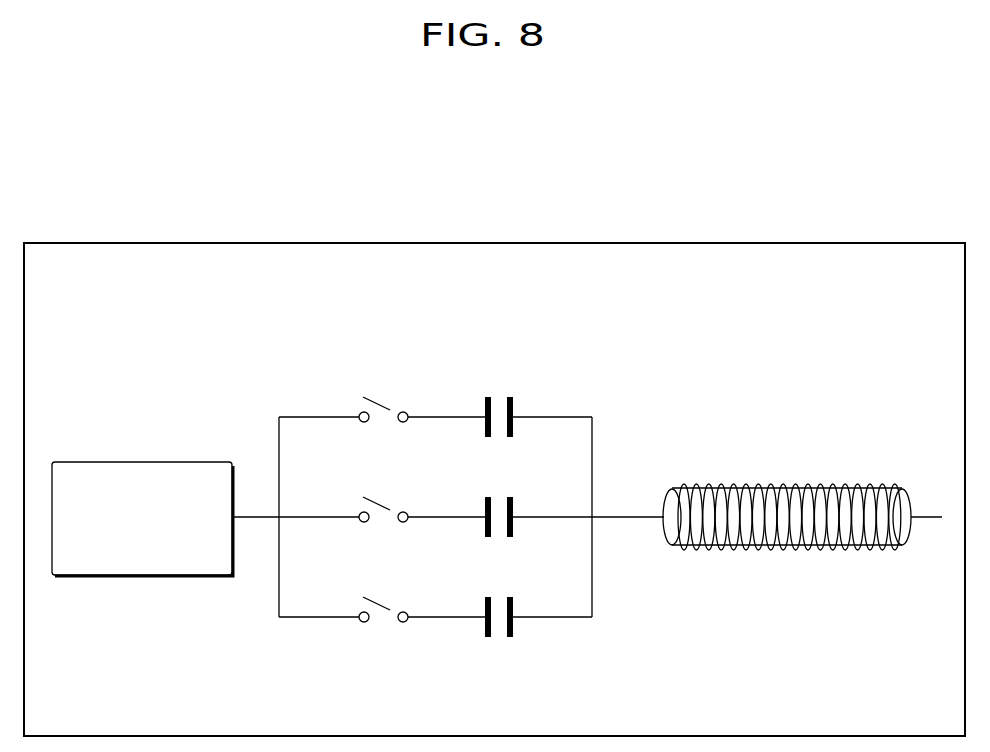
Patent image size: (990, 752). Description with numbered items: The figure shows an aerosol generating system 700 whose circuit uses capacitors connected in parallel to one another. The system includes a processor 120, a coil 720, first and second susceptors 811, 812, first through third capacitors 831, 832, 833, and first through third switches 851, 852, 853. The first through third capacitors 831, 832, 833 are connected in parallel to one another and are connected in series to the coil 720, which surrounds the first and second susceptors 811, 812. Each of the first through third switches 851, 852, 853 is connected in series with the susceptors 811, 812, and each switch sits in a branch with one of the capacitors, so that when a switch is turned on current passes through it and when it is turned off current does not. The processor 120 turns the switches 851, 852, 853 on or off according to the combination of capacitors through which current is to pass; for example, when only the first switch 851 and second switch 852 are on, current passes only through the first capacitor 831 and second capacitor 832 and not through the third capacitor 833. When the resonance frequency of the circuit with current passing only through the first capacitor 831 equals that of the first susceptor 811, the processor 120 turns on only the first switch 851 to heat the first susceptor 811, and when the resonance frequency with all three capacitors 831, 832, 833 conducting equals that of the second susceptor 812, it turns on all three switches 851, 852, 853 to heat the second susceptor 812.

The aerosol generating system 700 is at (805, 217).
The processor 120 is at (157, 462).
The first switch 851 is at (403, 401).
The second switch 852 is at (403, 501).
The third switch 853 is at (403, 601).
The first capacitor 831 is at (516, 404).
The second capacitor 832 is at (516, 504).
The third capacitor 833 is at (516, 604).
The coil 720 is at (822, 490).
The first susceptor 811 is at (672, 490).
The second susceptor 812 is at (905, 490).